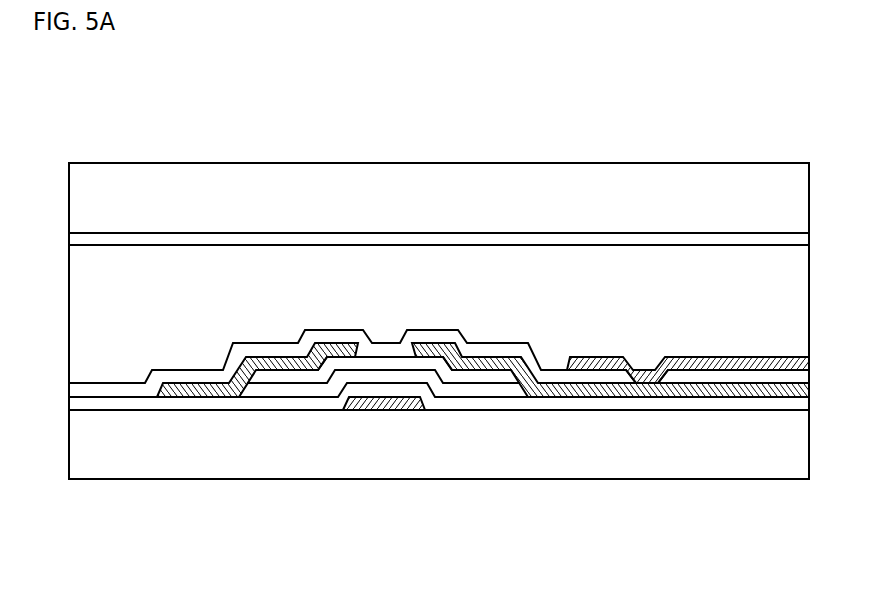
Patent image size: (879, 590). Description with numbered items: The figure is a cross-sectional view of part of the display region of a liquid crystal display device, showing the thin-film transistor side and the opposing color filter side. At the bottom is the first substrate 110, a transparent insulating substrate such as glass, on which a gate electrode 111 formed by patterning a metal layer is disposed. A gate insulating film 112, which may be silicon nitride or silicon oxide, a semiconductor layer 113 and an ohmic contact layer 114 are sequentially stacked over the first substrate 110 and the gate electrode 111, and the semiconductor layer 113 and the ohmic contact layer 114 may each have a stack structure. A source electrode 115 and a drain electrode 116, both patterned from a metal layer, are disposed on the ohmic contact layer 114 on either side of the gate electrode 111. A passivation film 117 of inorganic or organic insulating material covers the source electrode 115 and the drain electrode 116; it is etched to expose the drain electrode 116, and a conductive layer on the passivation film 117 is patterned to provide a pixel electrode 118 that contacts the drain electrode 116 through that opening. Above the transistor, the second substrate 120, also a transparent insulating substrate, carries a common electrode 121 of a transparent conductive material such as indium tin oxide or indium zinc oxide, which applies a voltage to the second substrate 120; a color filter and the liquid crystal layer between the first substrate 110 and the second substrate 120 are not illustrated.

The first substrate 110 is at (757, 447).
The gate electrode 111 is at (380, 403).
The gate insulating film 112 is at (290, 405).
The semiconductor layer 113 is at (460, 390).
The ohmic contact layer 114 is at (492, 378).
The source electrode 115 is at (190, 390).
The drain electrode 116 is at (588, 390).
The passivation film 117 is at (113, 403).
The pixel electrode 118 is at (690, 364).
The second substrate 120 is at (547, 192).
The common electrode 121 is at (464, 240).